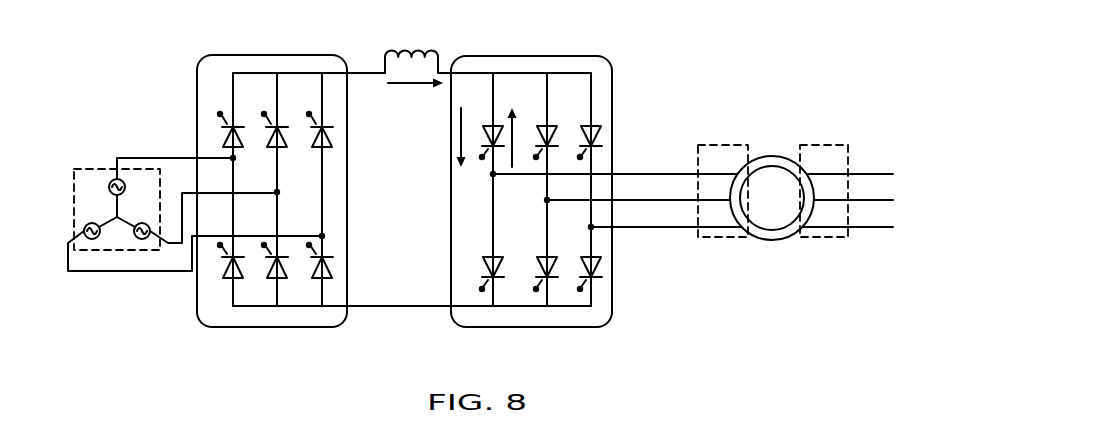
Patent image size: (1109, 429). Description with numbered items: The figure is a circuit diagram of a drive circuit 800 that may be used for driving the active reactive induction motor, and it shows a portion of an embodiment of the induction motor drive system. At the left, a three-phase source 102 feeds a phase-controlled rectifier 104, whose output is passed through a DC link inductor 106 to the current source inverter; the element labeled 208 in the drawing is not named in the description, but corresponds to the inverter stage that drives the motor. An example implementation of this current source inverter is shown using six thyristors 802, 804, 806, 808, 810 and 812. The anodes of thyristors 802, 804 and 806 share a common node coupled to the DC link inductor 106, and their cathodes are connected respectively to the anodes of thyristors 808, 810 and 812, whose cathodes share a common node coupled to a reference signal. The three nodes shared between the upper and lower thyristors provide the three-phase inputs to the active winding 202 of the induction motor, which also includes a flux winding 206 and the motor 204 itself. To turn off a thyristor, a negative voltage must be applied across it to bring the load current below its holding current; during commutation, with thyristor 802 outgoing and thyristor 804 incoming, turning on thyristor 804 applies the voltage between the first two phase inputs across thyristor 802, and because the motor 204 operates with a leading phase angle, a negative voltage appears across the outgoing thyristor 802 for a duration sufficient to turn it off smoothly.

The drive circuit 800 is at (736, 67).
The active winding 202 is at (103, 168).
The motor 204 is at (275, 60).
The flux winding 206 is at (413, 48).
The inverter 208 is at (513, 65).
The thyristor 802 is at (483, 128).
The thyristor 804 is at (551, 123).
The thyristor 806 is at (601, 128).
The thyristor 808 is at (490, 257).
The thyristor 810 is at (543, 257).
The thyristor 812 is at (601, 268).
The phase-controlled rectifier 104 is at (760, 156).
The three-phase source 102 is at (723, 238).
The DC link inductor 106 is at (823, 238).